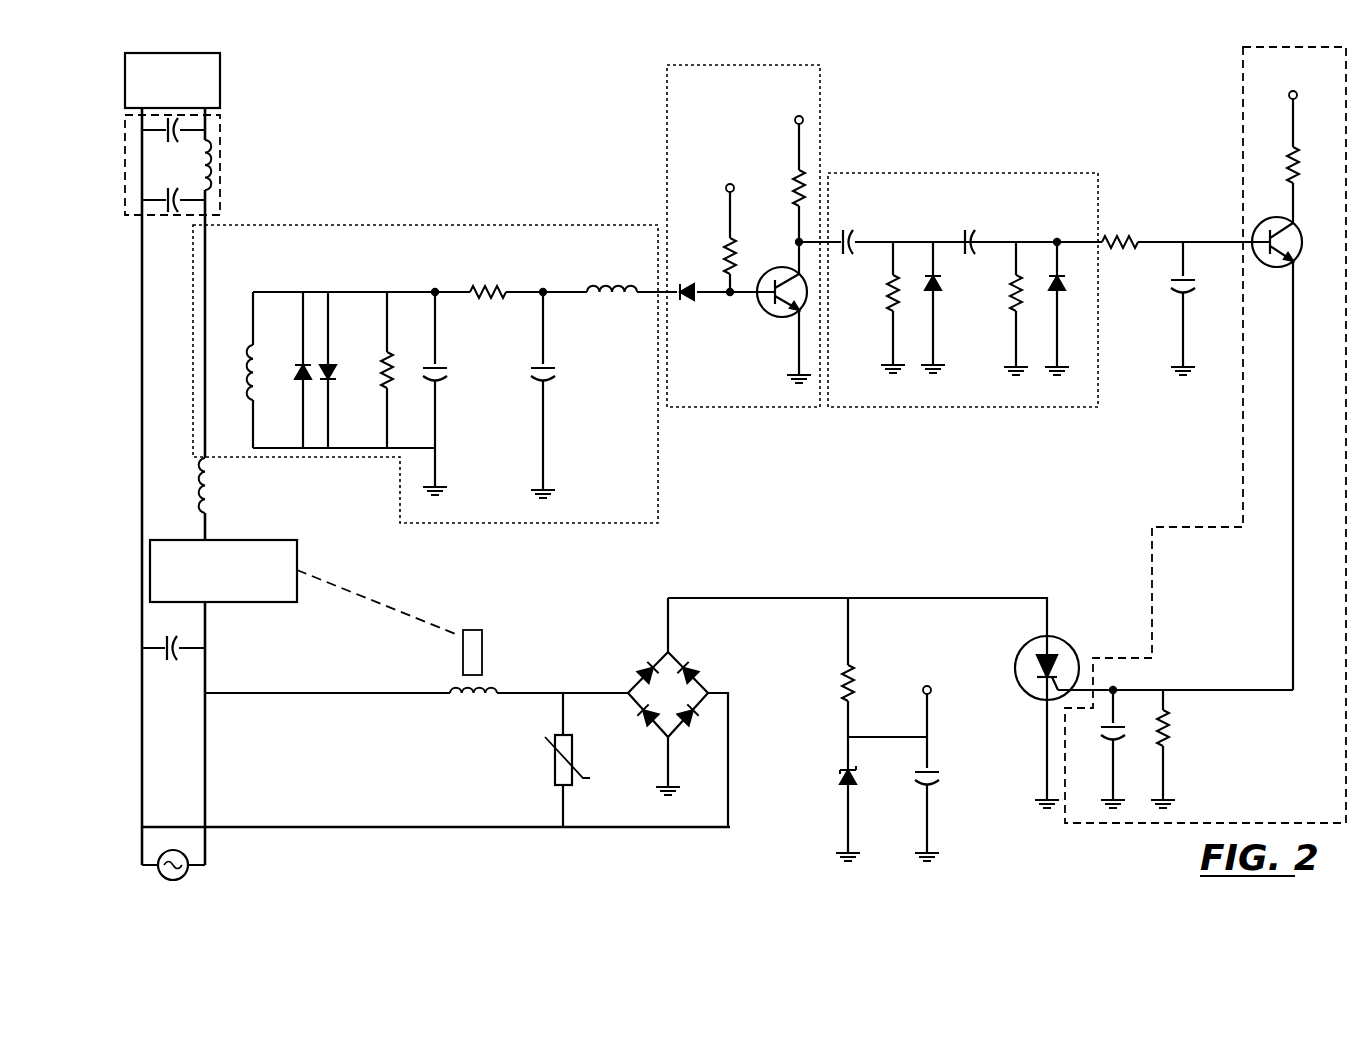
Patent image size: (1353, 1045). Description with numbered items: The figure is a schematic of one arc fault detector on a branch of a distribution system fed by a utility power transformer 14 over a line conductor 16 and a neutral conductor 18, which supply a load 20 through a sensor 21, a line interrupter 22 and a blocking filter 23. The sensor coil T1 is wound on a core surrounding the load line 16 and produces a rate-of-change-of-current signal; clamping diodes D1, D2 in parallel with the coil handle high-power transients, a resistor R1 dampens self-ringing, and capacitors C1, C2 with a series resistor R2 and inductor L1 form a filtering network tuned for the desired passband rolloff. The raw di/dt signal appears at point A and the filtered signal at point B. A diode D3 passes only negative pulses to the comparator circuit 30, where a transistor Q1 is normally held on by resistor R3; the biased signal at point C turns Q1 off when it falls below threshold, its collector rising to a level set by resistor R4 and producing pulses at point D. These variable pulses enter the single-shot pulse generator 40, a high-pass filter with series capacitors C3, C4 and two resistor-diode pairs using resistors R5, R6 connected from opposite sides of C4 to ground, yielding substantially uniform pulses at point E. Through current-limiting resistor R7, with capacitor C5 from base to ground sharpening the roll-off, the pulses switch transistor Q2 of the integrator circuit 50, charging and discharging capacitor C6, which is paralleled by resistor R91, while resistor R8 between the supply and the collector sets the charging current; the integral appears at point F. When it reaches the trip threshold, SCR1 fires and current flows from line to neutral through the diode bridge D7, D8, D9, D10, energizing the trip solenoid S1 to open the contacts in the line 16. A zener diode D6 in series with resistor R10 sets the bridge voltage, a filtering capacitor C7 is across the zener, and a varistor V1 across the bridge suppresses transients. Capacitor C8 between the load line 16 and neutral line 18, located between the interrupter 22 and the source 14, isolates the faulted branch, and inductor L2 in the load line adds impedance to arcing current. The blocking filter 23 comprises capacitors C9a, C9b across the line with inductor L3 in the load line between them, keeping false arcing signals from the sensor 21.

The utility company power transformer 14 is at (190, 877).
The line conductor 16 is at (203, 378).
The neutral conductor 18 is at (143, 765).
The load 20 is at (222, 80).
The sensor 21 is at (393, 223).
The line interrupter 22 is at (238, 540).
The blocking filter 23 is at (125, 150).
The comparator circuit 30 is at (820, 85).
The single-shot pulse generator circuit 40 is at (955, 172).
The integrator circuit 50 is at (1180, 527).
The inductor L1 is at (611, 282).
The inductor L2 is at (197, 489).
The inductor L3 is at (215, 163).
The capacitor C1 is at (443, 368).
The capacitor C2 is at (553, 368).
The capacitor C3 is at (855, 235).
The capacitor C4 is at (974, 233).
The capacitor C5 is at (1195, 290).
The capacitor C6 is at (1112, 733).
The filtering capacitor C7 is at (935, 777).
The capacitor C8 is at (177, 640).
The capacitor C9a is at (173, 210).
The capacitor C9b is at (176, 135).
The resistor R1 is at (390, 372).
The resistor R2 is at (487, 288).
The resistor R3 is at (728, 237).
The resistor R4 is at (793, 173).
The resistor R5 is at (888, 300).
The resistor R6 is at (1012, 300).
The current-limiting resistor R7 is at (1122, 230).
The resistor R8 is at (1290, 160).
The current-limiting resistor R10 is at (842, 680).
The resistor R91 is at (1170, 713).
The diode D1 is at (302, 352).
The diode D2 is at (330, 352).
The diode D3 is at (687, 300).
The zener diode D6 is at (942, 287).
The diode D7 is at (1063, 287).
The diode D8 is at (695, 718).
The diode D9 is at (647, 715).
The diode D10 is at (641, 673).
The sensor coil T1 is at (252, 378).
The transistor Q1 is at (779, 317).
The transistor Q2 is at (1303, 242).
The silicon controlled rectifier SCR1 is at (1078, 652).
The trip solenoid S1 is at (473, 703).
The varistor V1 is at (554, 768).
The point A is at (435, 292).
The point B is at (543, 292).
The point C is at (730, 300).
The point D is at (797, 241).
The point E is at (1058, 240).
The point F is at (1117, 690).